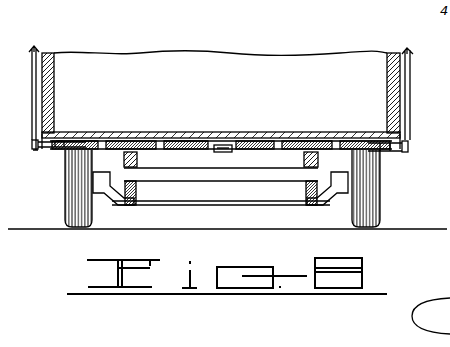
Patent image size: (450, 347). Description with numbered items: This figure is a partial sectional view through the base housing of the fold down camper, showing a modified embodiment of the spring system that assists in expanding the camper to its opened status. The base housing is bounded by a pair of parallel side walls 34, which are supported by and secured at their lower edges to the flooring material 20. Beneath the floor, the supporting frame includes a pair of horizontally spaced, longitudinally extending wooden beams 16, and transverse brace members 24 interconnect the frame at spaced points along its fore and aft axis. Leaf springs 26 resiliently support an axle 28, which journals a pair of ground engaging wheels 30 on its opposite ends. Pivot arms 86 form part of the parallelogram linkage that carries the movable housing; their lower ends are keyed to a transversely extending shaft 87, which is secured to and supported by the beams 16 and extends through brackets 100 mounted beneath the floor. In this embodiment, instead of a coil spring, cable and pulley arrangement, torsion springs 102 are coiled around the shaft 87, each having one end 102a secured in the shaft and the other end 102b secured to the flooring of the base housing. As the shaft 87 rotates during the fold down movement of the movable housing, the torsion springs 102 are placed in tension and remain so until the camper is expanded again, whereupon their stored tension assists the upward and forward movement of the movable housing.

The longitudinally extending wooden beams 16 is at (124, 159).
The flooring material 20 is at (213, 133).
The transverse brace members 24 is at (212, 173).
The leaf springs 26 is at (138, 185).
The axle 28 is at (197, 204).
The ground engaging wheels 30 is at (75, 210).
The side walls 34 is at (55, 70).
The pivot arm 86 is at (33, 80).
The transversely extending shaft 87 is at (41, 147).
The brackets 100 is at (62, 150).
The torsion springs 102 is at (343, 120).
The one end of torsion spring 102a is at (209, 142).
The other end of torsion spring 102b is at (102, 110).